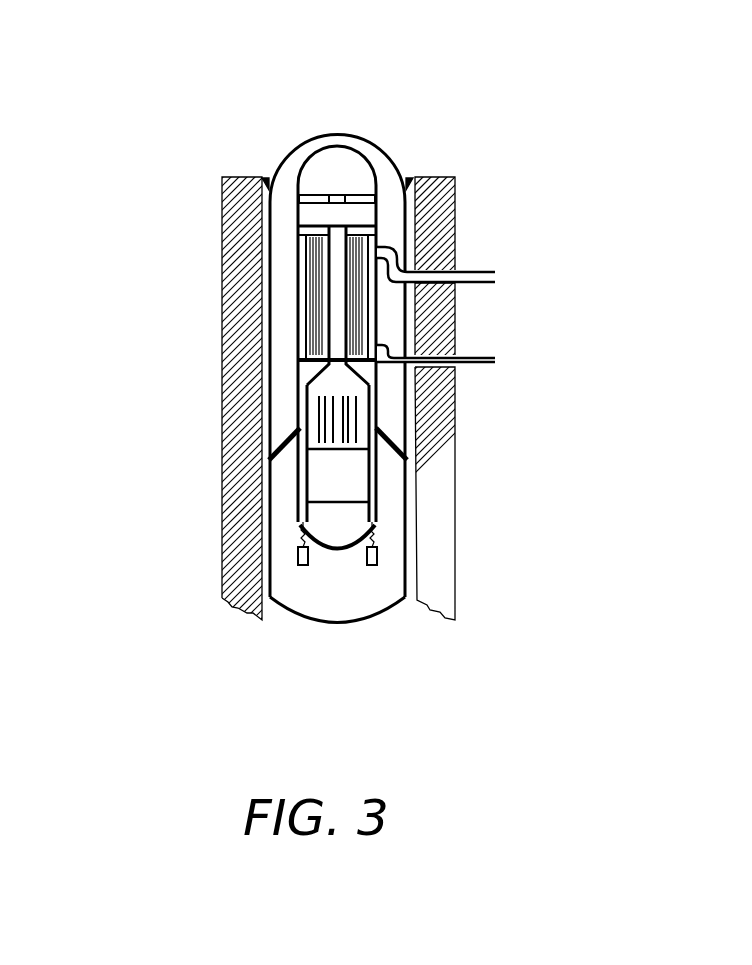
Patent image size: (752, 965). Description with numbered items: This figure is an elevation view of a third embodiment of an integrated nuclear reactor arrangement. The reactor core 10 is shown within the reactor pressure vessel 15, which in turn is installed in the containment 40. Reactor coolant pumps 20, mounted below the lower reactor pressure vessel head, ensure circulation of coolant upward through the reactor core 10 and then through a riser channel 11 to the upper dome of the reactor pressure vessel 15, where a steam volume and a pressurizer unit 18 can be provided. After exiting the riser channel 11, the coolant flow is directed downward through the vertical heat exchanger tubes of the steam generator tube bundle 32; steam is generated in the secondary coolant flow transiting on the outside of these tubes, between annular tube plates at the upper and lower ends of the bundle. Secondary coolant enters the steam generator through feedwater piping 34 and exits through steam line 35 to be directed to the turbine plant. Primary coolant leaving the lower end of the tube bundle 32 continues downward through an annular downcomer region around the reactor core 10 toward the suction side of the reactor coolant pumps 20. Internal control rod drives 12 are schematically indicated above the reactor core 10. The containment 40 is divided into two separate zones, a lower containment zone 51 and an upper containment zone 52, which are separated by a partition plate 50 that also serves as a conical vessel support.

The reactor core 10 is at (332, 473).
The riser channel 11 is at (328, 330).
The internal control rod drives 12 is at (333, 418).
The reactor pressure vessel 15 is at (378, 398).
The pressurizer unit 18 is at (348, 170).
The reactor coolant pumps 20 is at (302, 565).
The steam generator tube bundle 32 is at (310, 293).
The feedwater piping 34 is at (465, 363).
The steam line 35 is at (458, 273).
The containment 40 is at (298, 138).
The partition plate 50 is at (270, 449).
The lower containment zone 51 is at (348, 592).
The upper containment zone 52 is at (283, 162).